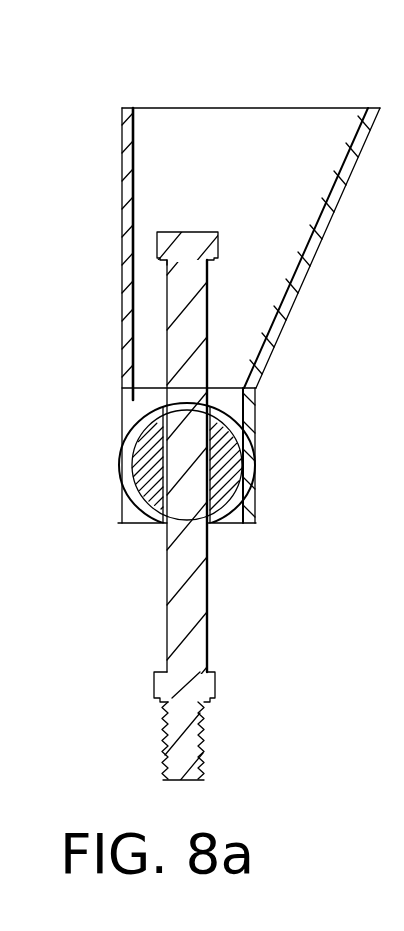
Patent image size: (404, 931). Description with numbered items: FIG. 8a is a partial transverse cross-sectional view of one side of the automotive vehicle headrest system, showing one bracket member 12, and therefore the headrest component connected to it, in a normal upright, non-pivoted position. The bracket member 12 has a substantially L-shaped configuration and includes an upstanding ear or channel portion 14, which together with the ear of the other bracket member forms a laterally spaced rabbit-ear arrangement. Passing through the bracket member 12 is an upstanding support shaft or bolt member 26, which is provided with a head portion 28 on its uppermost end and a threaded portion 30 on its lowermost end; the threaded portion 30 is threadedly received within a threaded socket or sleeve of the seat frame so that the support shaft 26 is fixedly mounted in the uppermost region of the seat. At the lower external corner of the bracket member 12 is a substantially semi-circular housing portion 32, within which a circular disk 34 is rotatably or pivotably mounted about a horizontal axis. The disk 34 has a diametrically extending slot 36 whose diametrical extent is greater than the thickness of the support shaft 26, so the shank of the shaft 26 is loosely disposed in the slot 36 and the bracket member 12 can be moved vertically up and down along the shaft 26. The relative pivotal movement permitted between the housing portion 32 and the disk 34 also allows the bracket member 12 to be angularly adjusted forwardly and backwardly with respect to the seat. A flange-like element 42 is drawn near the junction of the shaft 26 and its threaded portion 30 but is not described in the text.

The bracket member 12 is at (252, 390).
The upstanding ear or channel portion 14 is at (292, 125).
The upstanding support shaft or bolt member 26 is at (180, 317).
The head portion 28 is at (182, 233).
The threaded portion 30 is at (200, 737).
The semi-circular housing portion 32 is at (243, 477).
The circular disk 34 is at (143, 457).
The diametrically extending slot 36 is at (210, 468).
The flange nut 42 is at (215, 683).